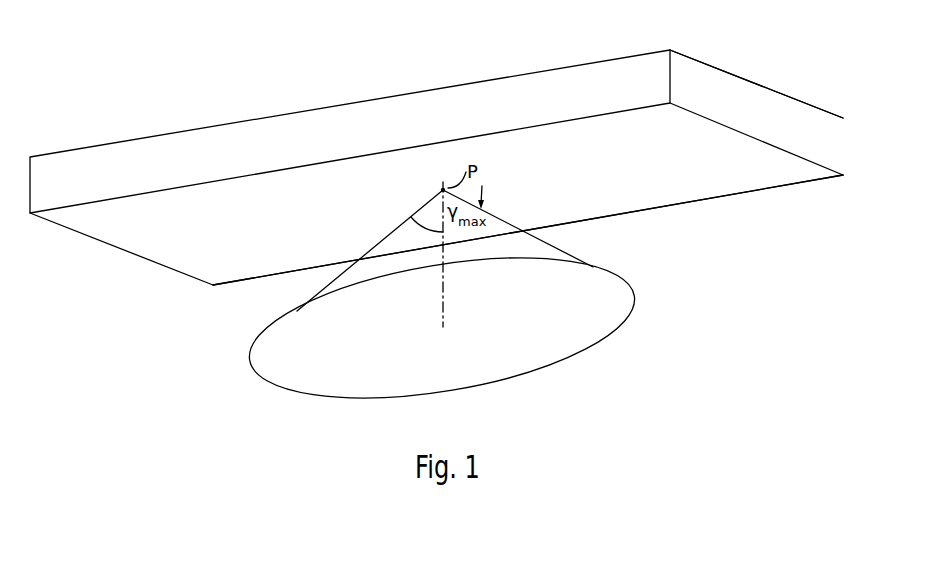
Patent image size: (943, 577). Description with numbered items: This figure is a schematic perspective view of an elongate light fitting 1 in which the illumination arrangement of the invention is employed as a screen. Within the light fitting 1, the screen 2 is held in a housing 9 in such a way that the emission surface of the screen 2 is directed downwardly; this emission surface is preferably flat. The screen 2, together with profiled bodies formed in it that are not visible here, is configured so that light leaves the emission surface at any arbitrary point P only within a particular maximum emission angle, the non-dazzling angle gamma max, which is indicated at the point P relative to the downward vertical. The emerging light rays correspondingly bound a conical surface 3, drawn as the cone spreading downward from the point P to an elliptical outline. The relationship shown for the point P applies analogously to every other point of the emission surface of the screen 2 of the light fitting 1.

The light fitting 1 is at (770, 60).
The housing 9 is at (812, 125).
The screen 2 is at (662, 188).
The conical surface 3 is at (335, 282).